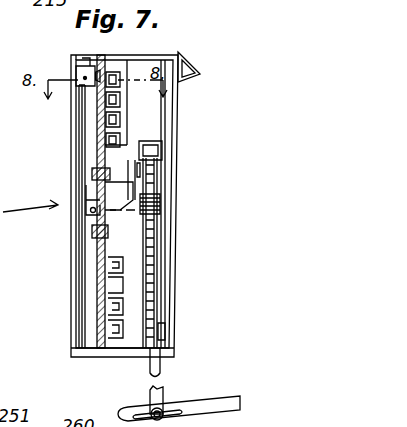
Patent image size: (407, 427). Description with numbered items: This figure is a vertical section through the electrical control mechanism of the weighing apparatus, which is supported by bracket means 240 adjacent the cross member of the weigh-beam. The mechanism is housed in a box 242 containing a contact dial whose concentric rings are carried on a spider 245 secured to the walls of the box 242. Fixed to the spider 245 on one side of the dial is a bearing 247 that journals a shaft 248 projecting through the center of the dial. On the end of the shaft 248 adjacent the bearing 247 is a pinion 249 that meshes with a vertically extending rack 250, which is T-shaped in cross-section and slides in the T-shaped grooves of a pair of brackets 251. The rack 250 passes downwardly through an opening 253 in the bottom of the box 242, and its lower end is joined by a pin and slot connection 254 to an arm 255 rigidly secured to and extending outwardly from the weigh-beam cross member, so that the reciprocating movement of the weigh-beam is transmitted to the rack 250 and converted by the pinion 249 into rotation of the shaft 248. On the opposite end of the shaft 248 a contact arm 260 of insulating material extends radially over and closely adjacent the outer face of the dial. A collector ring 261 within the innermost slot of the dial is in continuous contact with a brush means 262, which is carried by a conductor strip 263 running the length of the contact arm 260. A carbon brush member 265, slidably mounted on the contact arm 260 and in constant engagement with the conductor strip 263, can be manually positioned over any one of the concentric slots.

The bracket means 240 is at (197, 75).
The box 242 is at (176, 305).
The spider 245 is at (128, 126).
The bearing 247 is at (166, 186).
The shaft 248 is at (93, 214).
The pinion 249 is at (160, 211).
The rack 250 is at (157, 262).
The brackets 251 is at (162, 143).
The opening 253 is at (162, 368).
The pin and slot connection 254 is at (152, 408).
The arm 255 is at (213, 400).
The contact arm 260 is at (82, 153).
The collector ring 261 is at (95, 236).
The brush means 262 is at (93, 173).
The conductor strip 263 is at (92, 127).
The carbon brush member 265 is at (78, 78).